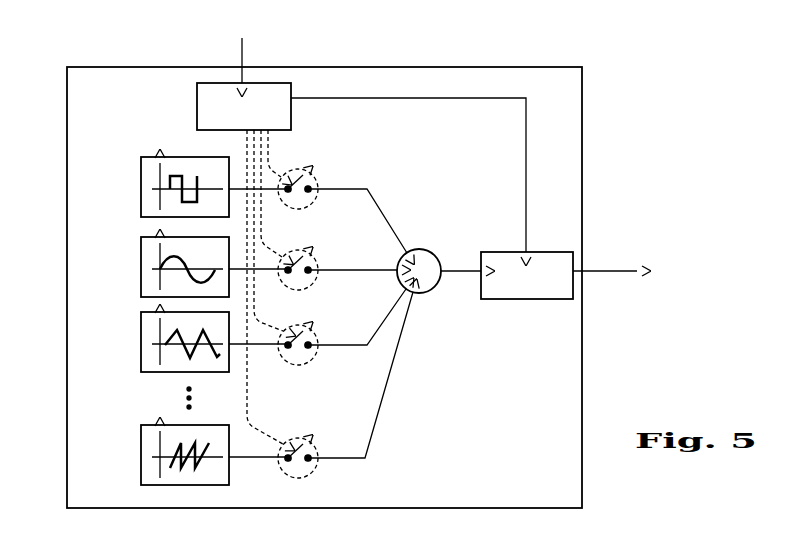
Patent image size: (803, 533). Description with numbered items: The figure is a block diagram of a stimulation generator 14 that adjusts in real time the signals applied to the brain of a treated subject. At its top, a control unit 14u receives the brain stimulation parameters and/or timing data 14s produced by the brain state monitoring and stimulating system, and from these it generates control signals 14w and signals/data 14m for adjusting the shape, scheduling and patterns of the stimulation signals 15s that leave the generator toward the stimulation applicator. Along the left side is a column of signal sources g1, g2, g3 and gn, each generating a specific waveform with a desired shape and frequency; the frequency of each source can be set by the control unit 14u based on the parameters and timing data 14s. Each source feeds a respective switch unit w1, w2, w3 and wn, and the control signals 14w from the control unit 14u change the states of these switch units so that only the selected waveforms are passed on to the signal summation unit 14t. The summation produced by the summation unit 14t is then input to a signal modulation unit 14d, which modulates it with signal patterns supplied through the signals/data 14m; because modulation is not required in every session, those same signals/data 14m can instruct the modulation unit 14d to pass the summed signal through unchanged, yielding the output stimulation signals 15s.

The stimulation generator 14 is at (88, 67).
The brain stimulation parameters and/or timing data 14s is at (265, 57).
The control unit 14u is at (197, 100).
The control signals 14w is at (240, 286).
The signals/data 14m is at (408, 164).
The signal summation unit 14t is at (431, 252).
The signal modulation unit 14d is at (503, 299).
The stimulation signals 15s is at (605, 260).
The signal source g1 is at (141, 189).
The signal source g2 is at (141, 269).
The signal source g3 is at (141, 344).
The signal source gn is at (141, 457).
The switch unit w1 is at (311, 174).
The switch unit w2 is at (312, 255).
The switch unit w3 is at (312, 330).
The switch unit wn is at (312, 443).